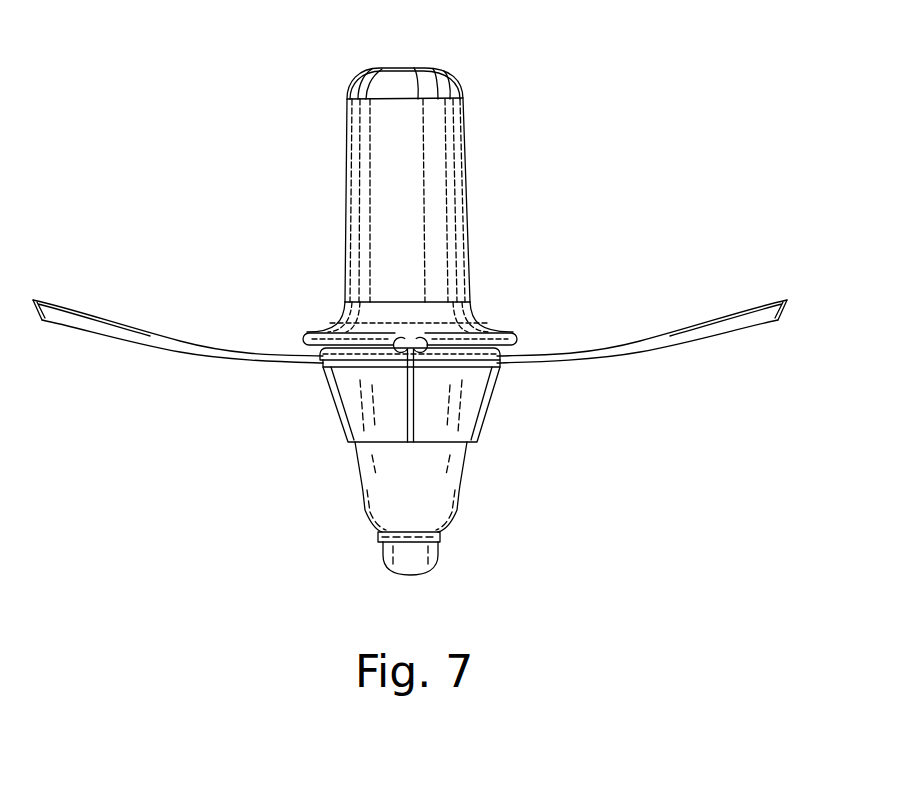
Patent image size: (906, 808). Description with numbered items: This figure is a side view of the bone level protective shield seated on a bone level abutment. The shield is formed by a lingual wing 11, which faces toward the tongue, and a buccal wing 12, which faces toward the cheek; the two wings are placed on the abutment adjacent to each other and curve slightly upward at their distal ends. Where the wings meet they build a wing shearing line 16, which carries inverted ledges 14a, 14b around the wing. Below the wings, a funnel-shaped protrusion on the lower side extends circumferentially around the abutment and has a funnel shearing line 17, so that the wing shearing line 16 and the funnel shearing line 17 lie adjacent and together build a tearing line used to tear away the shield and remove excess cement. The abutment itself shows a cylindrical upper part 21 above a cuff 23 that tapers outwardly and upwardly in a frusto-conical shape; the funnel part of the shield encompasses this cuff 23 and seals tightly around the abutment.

The lingual wing 11 is at (682, 340).
The buccal wing 12 is at (145, 342).
The inverted ledge 14a is at (419, 335).
The inverted ledge 14b is at (398, 335).
The wing shearing line 16 is at (420, 346).
The funnel shearing line 17 is at (412, 384).
The upper part of abutment 21 is at (465, 146).
The abutment cuff 23 is at (507, 333).